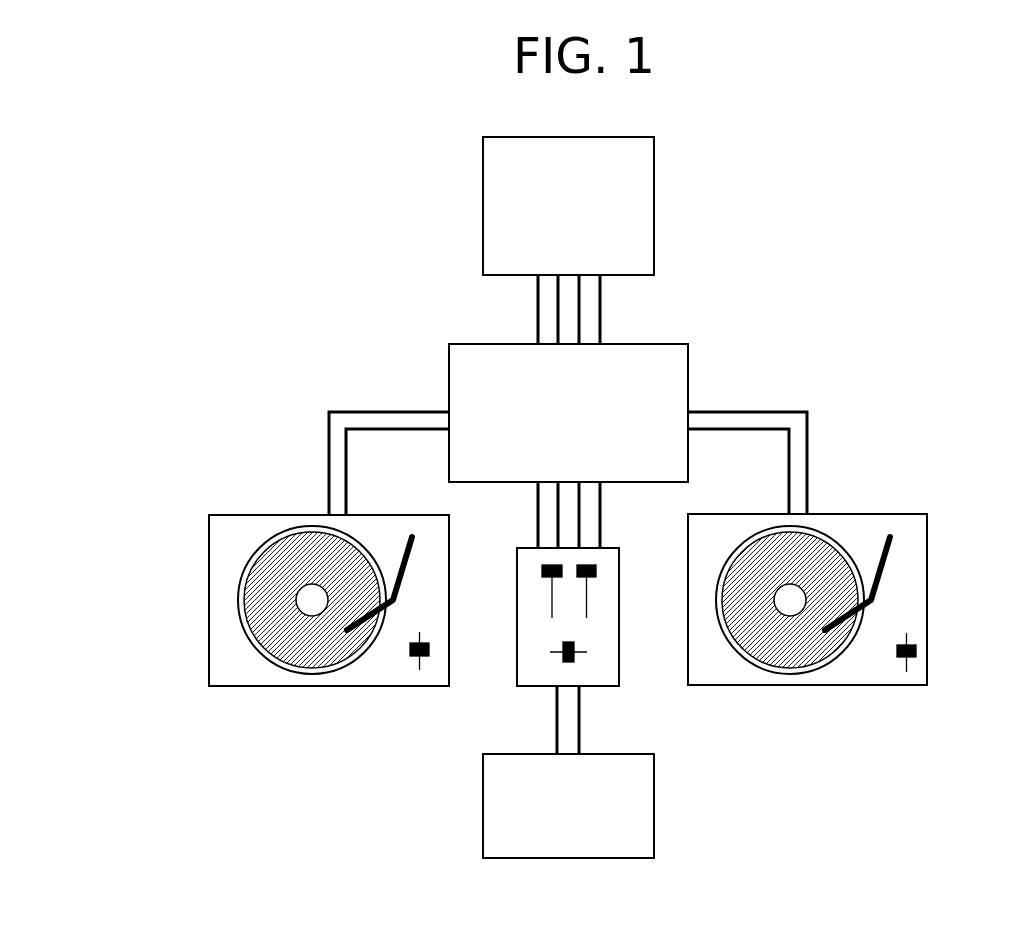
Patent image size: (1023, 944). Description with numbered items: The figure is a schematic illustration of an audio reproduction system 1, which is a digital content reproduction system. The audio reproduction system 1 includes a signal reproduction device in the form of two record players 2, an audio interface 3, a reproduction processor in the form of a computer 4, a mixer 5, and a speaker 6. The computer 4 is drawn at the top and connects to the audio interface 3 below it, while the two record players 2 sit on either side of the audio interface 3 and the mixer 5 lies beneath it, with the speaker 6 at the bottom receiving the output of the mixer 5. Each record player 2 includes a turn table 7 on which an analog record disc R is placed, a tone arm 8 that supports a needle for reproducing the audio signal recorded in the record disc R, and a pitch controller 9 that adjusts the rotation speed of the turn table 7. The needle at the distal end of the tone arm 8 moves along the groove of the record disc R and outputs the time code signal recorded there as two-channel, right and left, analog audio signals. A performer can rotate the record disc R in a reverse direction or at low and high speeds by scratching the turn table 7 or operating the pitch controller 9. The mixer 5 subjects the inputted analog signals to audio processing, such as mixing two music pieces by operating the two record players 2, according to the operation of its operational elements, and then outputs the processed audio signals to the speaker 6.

The audio reproduction system 1 is at (922, 252).
The record player 2 is at (208, 600).
The audio interface 3 is at (690, 378).
The computer 4 is at (657, 168).
The mixer 5 is at (621, 579).
The speaker 6 is at (656, 809).
The turn table 7 is at (325, 675).
The tone arm 8 is at (410, 572).
The pitch controller 9 is at (430, 651).
The record disc R is at (299, 553).